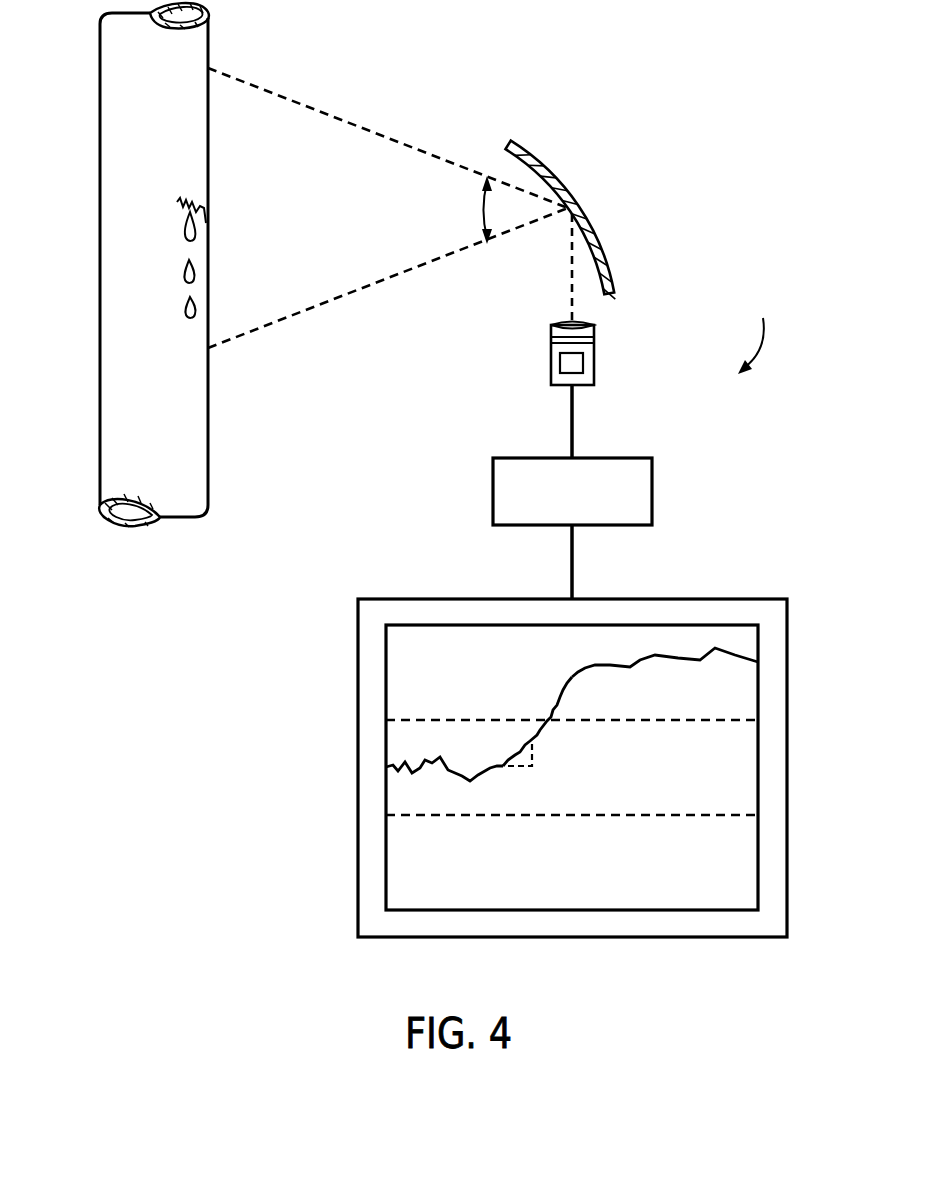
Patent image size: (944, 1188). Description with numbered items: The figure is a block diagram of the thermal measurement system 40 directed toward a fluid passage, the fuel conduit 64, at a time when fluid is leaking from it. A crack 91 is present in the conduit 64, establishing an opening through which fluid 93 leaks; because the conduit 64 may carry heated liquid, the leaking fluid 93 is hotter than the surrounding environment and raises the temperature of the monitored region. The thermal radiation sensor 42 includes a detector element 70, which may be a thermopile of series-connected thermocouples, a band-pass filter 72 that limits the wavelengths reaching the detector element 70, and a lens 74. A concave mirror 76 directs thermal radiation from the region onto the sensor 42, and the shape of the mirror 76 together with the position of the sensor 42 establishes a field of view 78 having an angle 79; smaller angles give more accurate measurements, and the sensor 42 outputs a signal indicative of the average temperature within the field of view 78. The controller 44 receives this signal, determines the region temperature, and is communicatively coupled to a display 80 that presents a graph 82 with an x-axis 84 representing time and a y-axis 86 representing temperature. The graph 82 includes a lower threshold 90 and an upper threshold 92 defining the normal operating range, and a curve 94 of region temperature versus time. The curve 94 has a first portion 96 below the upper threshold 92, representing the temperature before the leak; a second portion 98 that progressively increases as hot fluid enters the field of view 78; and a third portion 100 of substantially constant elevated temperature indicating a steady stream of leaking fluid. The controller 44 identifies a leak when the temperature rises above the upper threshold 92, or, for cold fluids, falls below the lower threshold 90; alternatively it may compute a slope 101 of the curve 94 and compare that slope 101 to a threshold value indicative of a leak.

The thermal measurement system 40 is at (758, 331).
The thermal radiation sensor 42 is at (596, 378).
The controller 44 is at (652, 488).
The fuel conduit 64 is at (100, 106).
The detector element 70 is at (560, 362).
The filter 72 is at (596, 340).
The lens 74 is at (558, 320).
The mirror 76 is at (598, 213).
The field of view 78 is at (391, 136).
The angle 79 is at (483, 210).
The display 80 is at (788, 770).
The graph 82 is at (572, 673).
The x-axis 84 is at (675, 909).
The y-axis 86 is at (386, 687).
The lower threshold 90 is at (583, 816).
The crack 91 is at (200, 208).
The upper threshold 92 is at (630, 720).
The fluid 93 is at (200, 270).
The curve 94 is at (550, 744).
The first portion 96 is at (470, 780).
The second portion 98 is at (550, 712).
The third portion 100 is at (640, 662).
The slope 101 is at (520, 752).